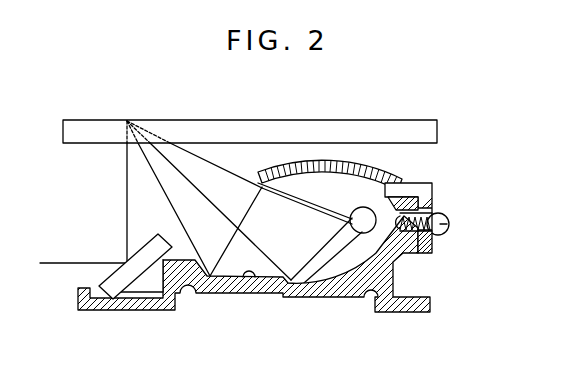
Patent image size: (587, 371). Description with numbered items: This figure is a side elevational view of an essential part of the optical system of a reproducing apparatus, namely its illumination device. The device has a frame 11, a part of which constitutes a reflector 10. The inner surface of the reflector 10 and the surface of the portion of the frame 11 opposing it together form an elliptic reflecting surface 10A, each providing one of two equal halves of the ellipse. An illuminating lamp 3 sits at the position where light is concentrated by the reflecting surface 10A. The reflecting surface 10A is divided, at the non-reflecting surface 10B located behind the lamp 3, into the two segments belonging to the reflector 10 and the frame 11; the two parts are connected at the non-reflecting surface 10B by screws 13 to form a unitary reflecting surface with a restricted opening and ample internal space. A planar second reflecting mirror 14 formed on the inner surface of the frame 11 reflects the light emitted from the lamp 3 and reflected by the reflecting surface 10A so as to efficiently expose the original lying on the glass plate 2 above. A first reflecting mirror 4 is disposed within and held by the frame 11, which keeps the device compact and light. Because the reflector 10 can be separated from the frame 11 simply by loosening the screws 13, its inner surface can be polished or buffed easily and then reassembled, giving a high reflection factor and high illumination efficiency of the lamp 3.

The platen / original document glass 2 is at (188, 120).
The illuminating lamp 3 is at (405, 183).
The first reflecting mirror 4 is at (142, 273).
The reflector 10 is at (318, 163).
The reflecting surface 10A is at (428, 192).
The non-reflecting surface 10B is at (434, 212).
The frame 11 is at (350, 295).
The screws 13 is at (445, 232).
The planar second reflecting mirror 14 is at (254, 290).